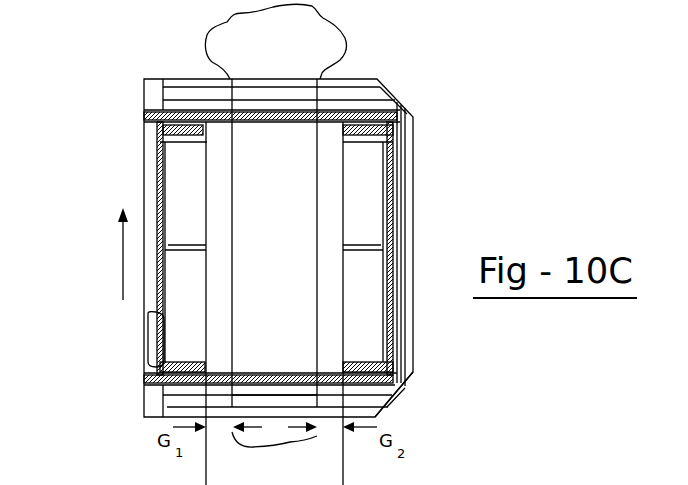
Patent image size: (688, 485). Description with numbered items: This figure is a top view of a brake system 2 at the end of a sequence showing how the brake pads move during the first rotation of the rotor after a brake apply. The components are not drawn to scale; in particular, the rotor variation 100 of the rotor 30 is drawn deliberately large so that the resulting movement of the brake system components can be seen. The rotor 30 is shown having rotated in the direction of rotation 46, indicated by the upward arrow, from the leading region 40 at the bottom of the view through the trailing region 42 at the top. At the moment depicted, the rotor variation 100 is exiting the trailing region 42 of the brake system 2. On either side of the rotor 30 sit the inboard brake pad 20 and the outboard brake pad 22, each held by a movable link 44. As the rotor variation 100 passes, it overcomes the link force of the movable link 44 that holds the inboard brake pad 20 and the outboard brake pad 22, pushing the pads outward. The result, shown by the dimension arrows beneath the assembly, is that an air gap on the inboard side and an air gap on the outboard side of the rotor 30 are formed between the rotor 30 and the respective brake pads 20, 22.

The brake system 2 is at (98, 97).
The inboard brake pad 20 is at (195, 197).
The outboard brake pad 22 is at (360, 182).
The rotor 30 is at (290, 317).
The leading region 40 is at (421, 398).
The trailing region 42 is at (424, 112).
The movable link 44 is at (252, 118).
The direction of rotation 46 is at (123, 275).
The rotor variation 100 is at (220, 48).